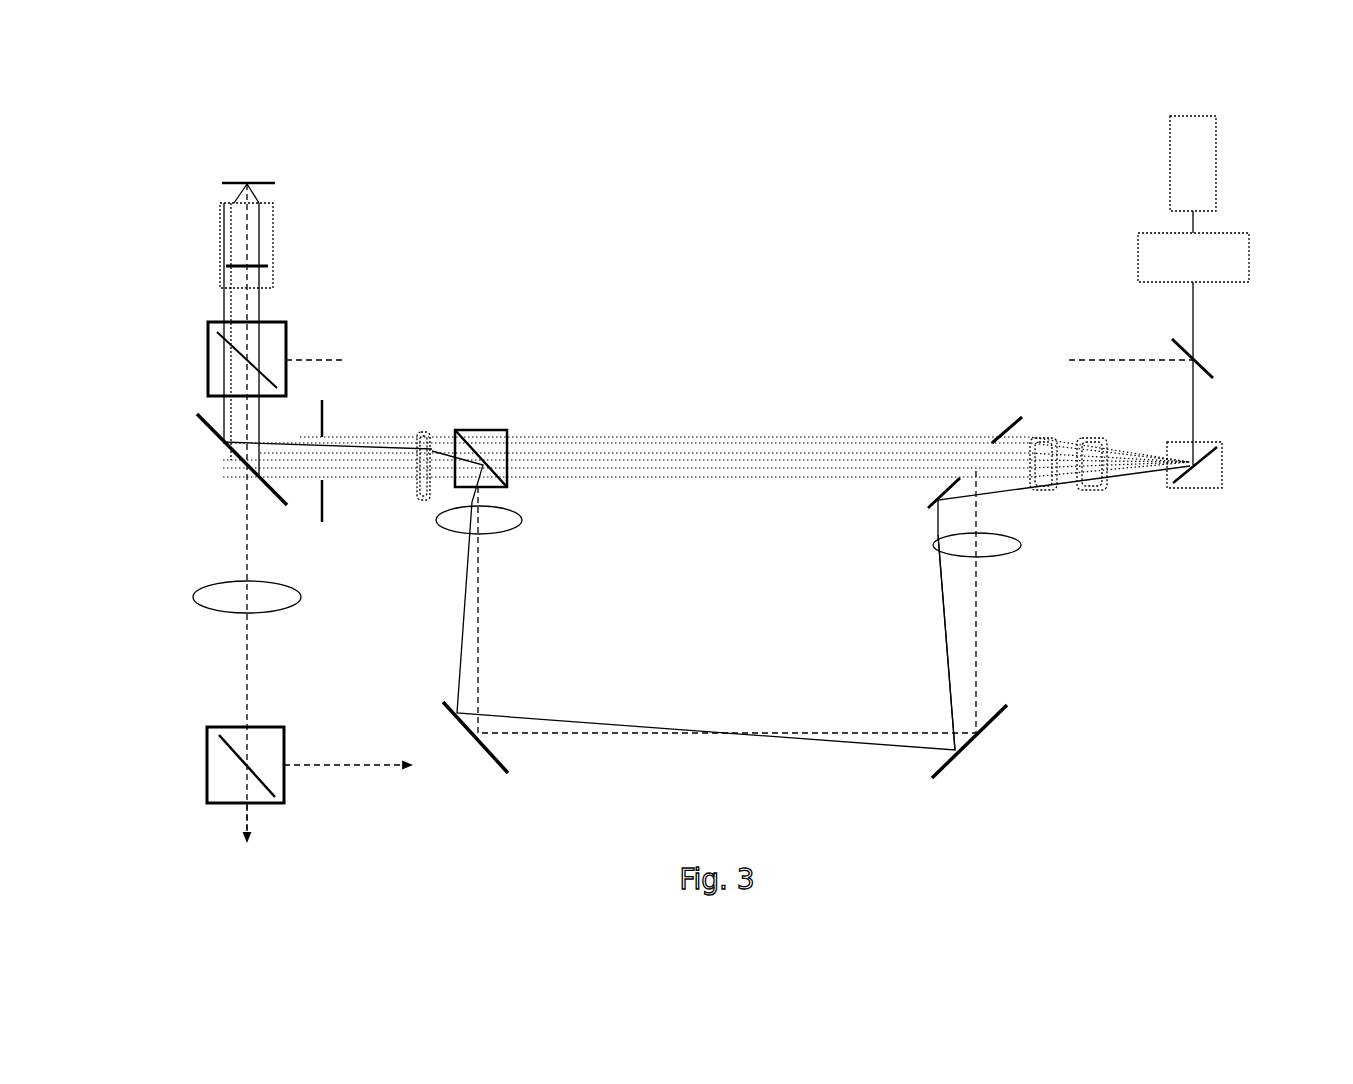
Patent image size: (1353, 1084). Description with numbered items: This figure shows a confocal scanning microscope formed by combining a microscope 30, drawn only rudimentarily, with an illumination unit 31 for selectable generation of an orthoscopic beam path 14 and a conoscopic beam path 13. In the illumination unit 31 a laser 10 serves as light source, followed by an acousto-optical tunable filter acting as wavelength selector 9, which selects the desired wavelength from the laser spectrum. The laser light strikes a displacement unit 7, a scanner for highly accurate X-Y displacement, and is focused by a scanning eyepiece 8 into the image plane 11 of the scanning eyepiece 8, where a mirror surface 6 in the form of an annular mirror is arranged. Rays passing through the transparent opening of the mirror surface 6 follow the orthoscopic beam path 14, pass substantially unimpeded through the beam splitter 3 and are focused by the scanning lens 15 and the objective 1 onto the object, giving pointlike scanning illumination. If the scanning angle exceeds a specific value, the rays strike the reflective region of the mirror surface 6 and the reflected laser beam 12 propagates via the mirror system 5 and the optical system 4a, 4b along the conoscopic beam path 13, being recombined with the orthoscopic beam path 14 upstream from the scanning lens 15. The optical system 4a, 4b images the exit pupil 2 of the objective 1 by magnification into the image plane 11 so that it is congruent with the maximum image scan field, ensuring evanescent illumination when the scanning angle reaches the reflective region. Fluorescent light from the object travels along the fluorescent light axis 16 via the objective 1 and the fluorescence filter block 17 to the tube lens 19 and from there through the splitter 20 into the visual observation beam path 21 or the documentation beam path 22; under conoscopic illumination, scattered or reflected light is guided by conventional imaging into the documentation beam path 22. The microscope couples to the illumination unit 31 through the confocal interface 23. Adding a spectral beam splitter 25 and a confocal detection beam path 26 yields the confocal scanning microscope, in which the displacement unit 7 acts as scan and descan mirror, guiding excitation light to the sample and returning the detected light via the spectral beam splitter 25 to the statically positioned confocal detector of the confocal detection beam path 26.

The objective 1 is at (277, 218).
The exit pupil 2 is at (262, 267).
The beam splitter 3 is at (491, 427).
The optical system (Bertrand lens unit) 4a is at (523, 525).
The optical system (Bertrand lens unit) 4b is at (1007, 553).
The mirror system 5 is at (933, 768).
The mirror surface 6 is at (1000, 425).
The displacement unit, scanner 7 is at (1207, 497).
The scanning eyepiece 8 is at (1080, 490).
The wavelength selector, AOTF 9 is at (1138, 242).
The light source, laser 10 is at (1170, 130).
The image plane of scanning eyepiece 11 is at (977, 467).
The laser beam 12 is at (945, 610).
The conoscopic beam path 13 is at (703, 735).
The orthoscopic beam path 14 is at (720, 445).
The scanning lens 15 is at (428, 428).
The fluorescent incident light axis 16 is at (333, 360).
The fluorescence filter block 17 is at (208, 352).
The tube lens 19 is at (205, 580).
The splitter 20 is at (205, 725).
The visual observation beam path 21 is at (247, 846).
The documentation beam path 22 is at (365, 765).
The confocal interface 23 is at (322, 527).
The spectral beam splitter 25 is at (1205, 362).
The confocal detection beam path 26 is at (1114, 360).
The microscope 30 is at (232, 510).
The illumination unit 31 is at (905, 292).